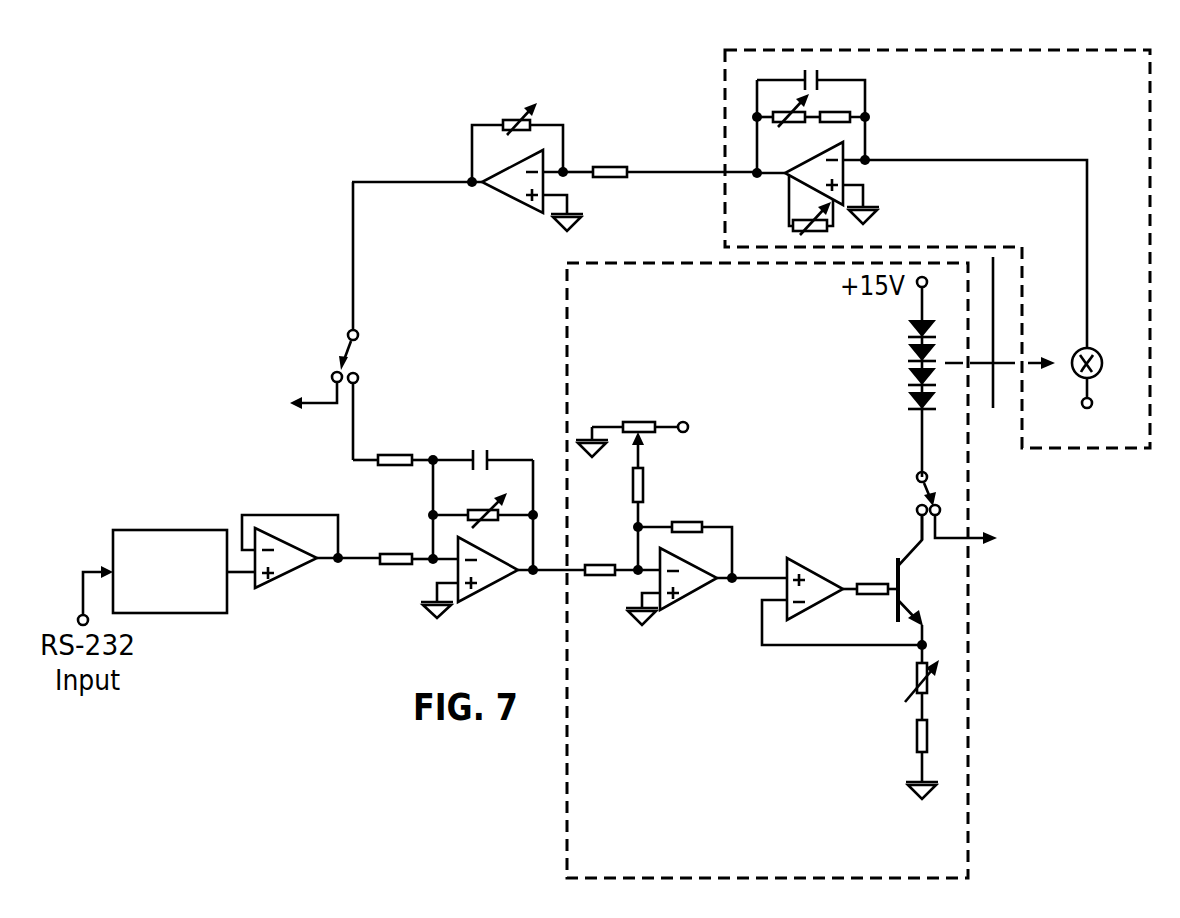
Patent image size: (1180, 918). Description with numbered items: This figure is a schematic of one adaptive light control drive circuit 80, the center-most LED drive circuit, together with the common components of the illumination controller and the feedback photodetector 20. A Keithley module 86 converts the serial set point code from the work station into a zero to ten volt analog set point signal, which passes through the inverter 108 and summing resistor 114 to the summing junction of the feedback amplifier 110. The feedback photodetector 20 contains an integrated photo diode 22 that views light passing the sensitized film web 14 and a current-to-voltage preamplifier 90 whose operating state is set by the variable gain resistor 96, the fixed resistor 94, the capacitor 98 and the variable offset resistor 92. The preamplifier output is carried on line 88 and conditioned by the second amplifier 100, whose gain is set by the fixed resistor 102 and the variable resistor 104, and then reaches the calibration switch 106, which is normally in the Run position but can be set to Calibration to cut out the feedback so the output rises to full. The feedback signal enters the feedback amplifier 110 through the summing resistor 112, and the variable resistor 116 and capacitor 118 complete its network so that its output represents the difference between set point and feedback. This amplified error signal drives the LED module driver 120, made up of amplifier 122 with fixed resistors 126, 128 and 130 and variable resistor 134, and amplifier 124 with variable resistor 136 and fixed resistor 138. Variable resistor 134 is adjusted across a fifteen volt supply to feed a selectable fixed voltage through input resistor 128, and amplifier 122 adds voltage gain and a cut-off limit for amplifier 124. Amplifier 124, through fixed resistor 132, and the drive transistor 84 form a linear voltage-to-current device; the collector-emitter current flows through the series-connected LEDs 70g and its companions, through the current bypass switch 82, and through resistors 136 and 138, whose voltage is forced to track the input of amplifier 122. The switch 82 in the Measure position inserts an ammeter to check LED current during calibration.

The sensitized film web 14 is at (1012, 290).
The feedback photodetector 20 is at (1027, 113).
The photo diode 22 is at (1103, 355).
The LED 70g is at (908, 325).
The adaptive light control drive circuit 80 is at (658, 853).
The current bypass switch 82 is at (918, 500).
The drive transistor 84 is at (910, 588).
The Keithley M3181 module 86 is at (160, 530).
The line 88 is at (680, 176).
The current-to-voltage preamplifier 90 is at (860, 175).
The variable offset resistor 92 is at (795, 225).
The fixed gain resistor 94 is at (838, 120).
The variable gain resistor 96 is at (808, 105).
The capacitor 98 is at (815, 70).
The second amplifier 100 is at (510, 185).
The fixed resistor 102 is at (610, 165).
The variable resistor 104 is at (512, 120).
The calibration switch 106 is at (358, 363).
The inverter 108 is at (290, 576).
The feedback amplifier 110 is at (507, 585).
The summing resistor 112 is at (368, 462).
The summing resistor 114 is at (397, 568).
The variable resistor 116 is at (482, 533).
The capacitor 118 is at (478, 447).
The LED module driver 120 is at (751, 346).
The operational amplifier 122 is at (690, 593).
The operational amplifier 124 is at (795, 562).
The fixed resistor 126 is at (605, 580).
The fixed resistor 128 is at (648, 482).
The fixed resistor 130 is at (690, 520).
The fixed resistor 132 is at (885, 596).
The variable resistor 134 is at (632, 420).
The variable resistor 136 is at (908, 682).
The fixed resistor 138 is at (910, 730).